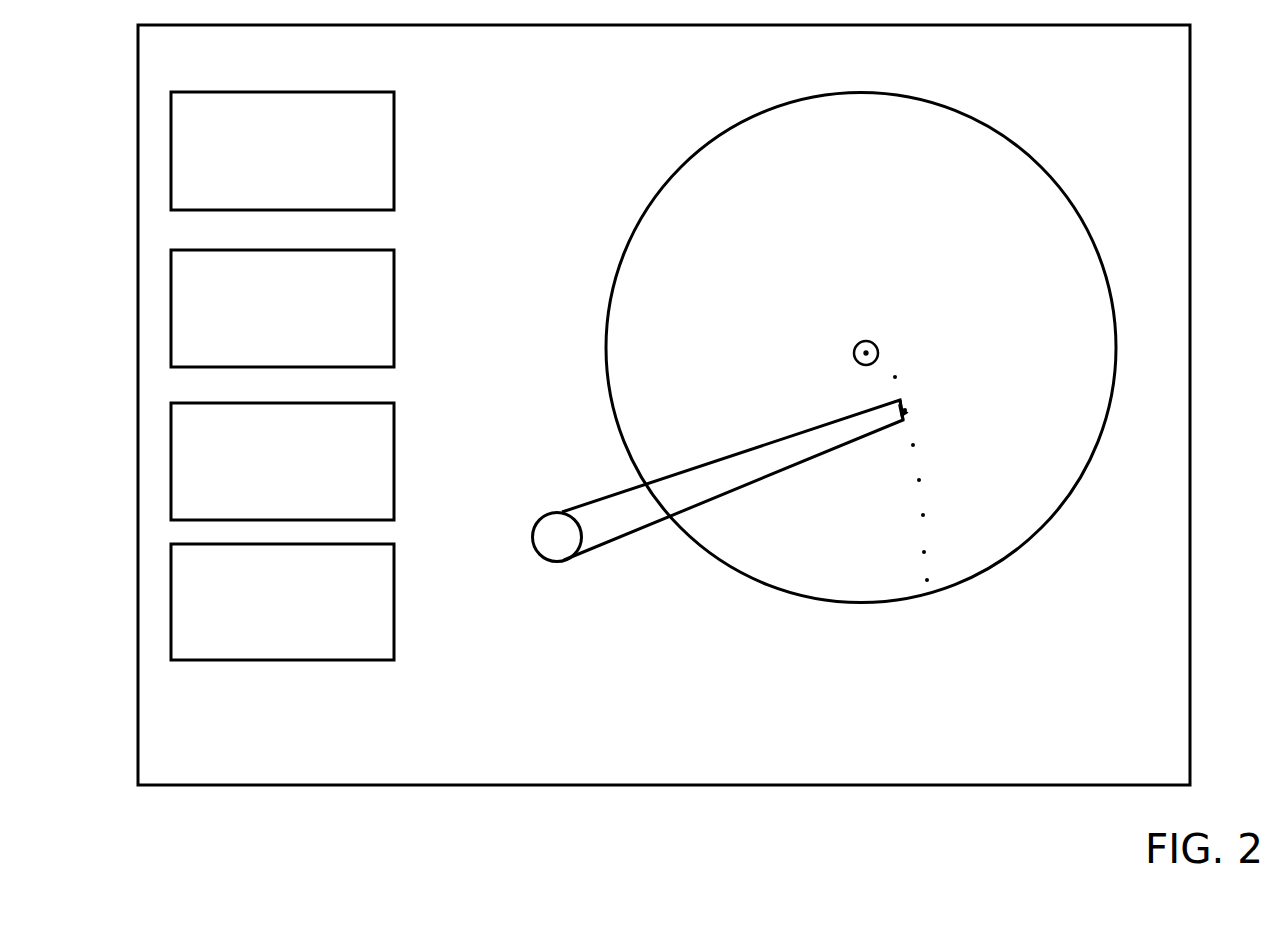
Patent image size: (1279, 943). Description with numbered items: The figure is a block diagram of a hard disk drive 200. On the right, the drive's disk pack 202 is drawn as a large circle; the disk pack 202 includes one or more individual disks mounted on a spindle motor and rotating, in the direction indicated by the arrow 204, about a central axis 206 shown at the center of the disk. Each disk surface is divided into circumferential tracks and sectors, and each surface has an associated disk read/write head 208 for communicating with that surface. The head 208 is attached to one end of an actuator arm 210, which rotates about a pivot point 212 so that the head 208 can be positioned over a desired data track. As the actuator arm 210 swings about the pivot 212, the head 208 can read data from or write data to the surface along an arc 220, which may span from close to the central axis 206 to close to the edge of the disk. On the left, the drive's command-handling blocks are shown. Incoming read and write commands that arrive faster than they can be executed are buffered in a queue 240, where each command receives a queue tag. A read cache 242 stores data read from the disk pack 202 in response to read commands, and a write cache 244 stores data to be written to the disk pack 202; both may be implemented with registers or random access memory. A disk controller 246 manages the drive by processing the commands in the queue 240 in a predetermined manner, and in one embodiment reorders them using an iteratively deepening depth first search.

The hard disk drive 200 is at (664, 405).
The disk pack 202 is at (861, 348).
The arrow 204 is at (1131, 438).
The central axis 206 is at (853, 338).
The disk read/write head 208 is at (903, 421).
The actuator arm 210 is at (649, 532).
The pivot point 212 is at (556, 570).
The arc 220 is at (897, 377).
The queue 240 is at (282, 151).
The read cache 242 is at (282, 308).
The write cache 244 is at (282, 461).
The disk controller 246 is at (282, 602).